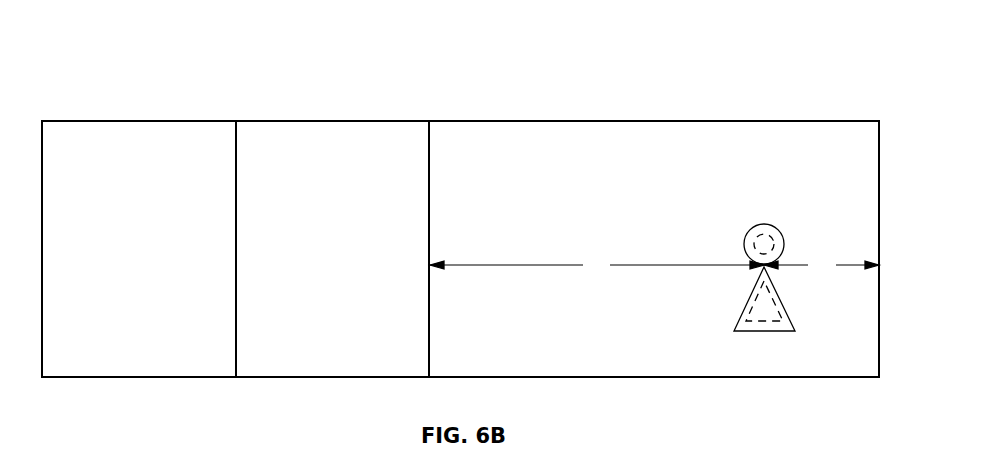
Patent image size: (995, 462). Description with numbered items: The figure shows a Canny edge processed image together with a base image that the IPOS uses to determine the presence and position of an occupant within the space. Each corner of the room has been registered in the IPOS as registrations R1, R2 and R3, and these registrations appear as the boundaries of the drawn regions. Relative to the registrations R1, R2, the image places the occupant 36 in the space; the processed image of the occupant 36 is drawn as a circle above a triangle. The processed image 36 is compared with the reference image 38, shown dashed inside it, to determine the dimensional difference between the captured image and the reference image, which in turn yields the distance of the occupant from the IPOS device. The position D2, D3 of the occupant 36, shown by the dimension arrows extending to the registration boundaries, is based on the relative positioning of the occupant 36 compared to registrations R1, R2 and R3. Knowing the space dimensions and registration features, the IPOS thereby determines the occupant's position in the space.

The registration R1 is at (879, 118).
The registration R2 is at (429, 120).
The registration R3 is at (236, 120).
The occupant 36 is at (762, 224).
The reference image 38 is at (766, 326).
The position D2 is at (597, 265).
The position D3 is at (821, 265).